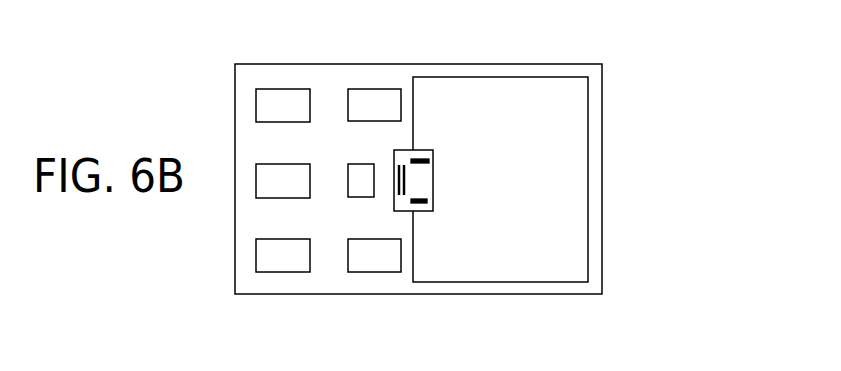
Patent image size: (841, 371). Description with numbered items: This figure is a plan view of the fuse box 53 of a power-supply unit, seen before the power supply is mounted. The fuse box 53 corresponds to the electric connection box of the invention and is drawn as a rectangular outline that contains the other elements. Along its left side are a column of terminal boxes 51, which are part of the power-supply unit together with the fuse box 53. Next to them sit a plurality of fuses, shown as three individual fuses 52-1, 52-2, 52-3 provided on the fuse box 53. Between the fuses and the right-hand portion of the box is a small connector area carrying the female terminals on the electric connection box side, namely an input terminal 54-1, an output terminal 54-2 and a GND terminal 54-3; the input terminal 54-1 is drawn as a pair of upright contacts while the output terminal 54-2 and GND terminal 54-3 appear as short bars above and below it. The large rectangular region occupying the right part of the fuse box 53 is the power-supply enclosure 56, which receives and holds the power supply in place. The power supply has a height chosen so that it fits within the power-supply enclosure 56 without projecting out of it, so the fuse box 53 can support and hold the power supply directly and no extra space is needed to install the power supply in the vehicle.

The terminal box 51 is at (262, 108).
The fuse 52-1 is at (373, 264).
The fuse 52-2 is at (356, 166).
The fuse 52-3 is at (373, 95).
The fuse box 53 is at (325, 68).
The input terminal 54-1 is at (406, 185).
The output terminal 54-2 is at (421, 205).
The GND terminal 54-3 is at (420, 157).
The power-supply enclosure 56 is at (578, 188).